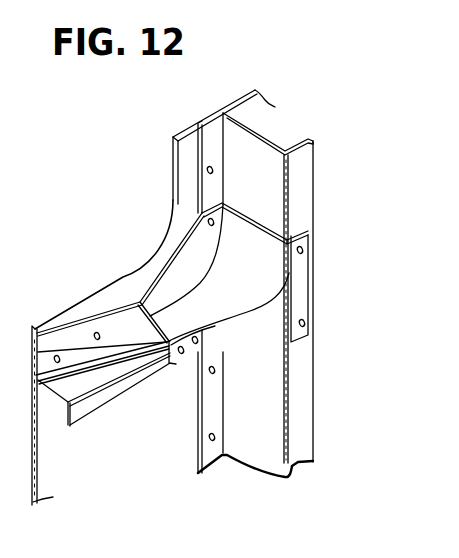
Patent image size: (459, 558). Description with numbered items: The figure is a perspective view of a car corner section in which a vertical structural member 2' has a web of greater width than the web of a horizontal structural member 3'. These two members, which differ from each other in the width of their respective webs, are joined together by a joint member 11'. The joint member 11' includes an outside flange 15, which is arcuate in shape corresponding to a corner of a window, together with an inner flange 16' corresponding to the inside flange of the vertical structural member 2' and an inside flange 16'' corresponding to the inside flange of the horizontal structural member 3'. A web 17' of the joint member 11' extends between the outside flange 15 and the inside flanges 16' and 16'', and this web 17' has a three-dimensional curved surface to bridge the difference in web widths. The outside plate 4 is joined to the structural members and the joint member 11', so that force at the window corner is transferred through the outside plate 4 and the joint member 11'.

The vertical structural member 2' is at (262, 283).
The horizontal structural member 3' is at (101, 415).
The outside plate 4 is at (173, 225).
The outside flange 15 is at (177, 265).
The web 17' is at (279, 217).
The inner flange 16' is at (329, 288).
The joint member 11' is at (261, 273).
The inside flange 16'' is at (176, 363).